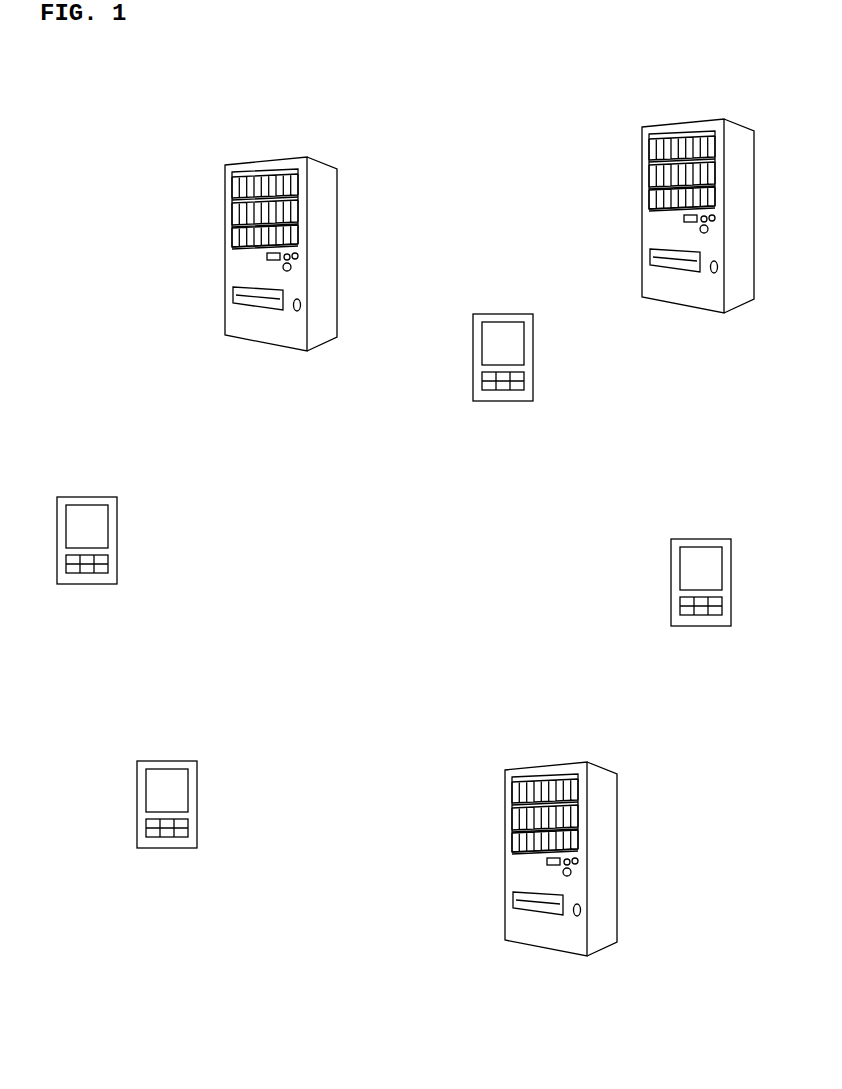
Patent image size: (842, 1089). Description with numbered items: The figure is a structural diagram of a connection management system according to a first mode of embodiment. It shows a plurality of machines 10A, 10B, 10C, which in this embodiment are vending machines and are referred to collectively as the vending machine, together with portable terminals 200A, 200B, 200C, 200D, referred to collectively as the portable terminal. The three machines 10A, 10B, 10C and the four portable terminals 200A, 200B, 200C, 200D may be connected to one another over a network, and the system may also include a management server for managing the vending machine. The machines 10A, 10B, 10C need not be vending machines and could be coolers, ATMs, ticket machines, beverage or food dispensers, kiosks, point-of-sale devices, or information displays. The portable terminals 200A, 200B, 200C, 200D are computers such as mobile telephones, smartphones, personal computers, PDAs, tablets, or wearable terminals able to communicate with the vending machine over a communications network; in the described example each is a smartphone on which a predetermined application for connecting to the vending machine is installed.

The machine 10A is at (273, 161).
The machine 10B is at (708, 119).
The machine 10C is at (558, 764).
The portable terminal 200A is at (88, 495).
The portable terminal 200B is at (165, 759).
The portable terminal 200C is at (505, 313).
The portable terminal 200D is at (704, 538).